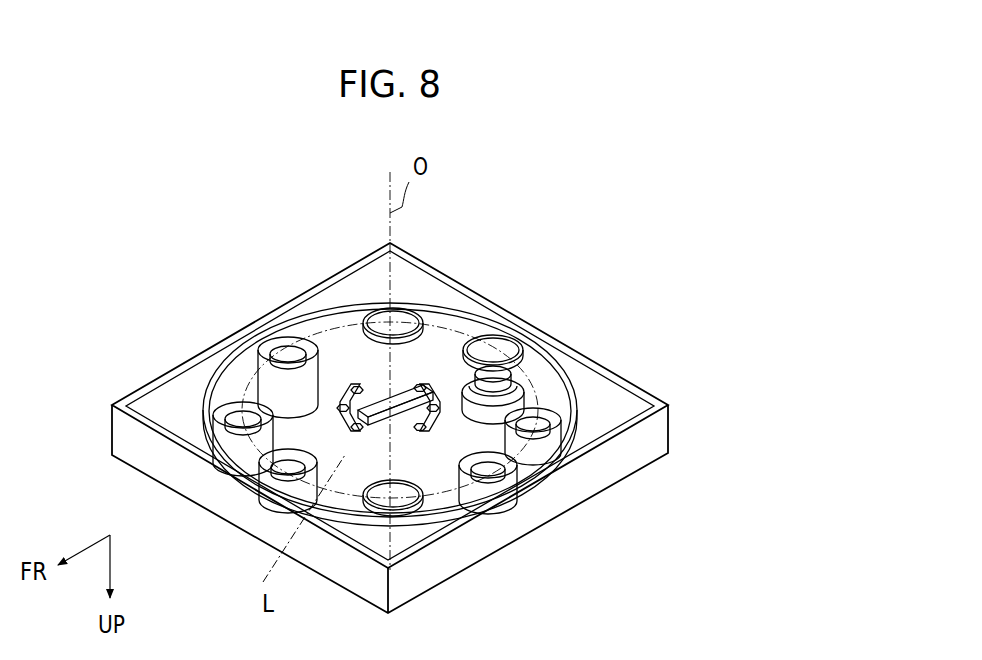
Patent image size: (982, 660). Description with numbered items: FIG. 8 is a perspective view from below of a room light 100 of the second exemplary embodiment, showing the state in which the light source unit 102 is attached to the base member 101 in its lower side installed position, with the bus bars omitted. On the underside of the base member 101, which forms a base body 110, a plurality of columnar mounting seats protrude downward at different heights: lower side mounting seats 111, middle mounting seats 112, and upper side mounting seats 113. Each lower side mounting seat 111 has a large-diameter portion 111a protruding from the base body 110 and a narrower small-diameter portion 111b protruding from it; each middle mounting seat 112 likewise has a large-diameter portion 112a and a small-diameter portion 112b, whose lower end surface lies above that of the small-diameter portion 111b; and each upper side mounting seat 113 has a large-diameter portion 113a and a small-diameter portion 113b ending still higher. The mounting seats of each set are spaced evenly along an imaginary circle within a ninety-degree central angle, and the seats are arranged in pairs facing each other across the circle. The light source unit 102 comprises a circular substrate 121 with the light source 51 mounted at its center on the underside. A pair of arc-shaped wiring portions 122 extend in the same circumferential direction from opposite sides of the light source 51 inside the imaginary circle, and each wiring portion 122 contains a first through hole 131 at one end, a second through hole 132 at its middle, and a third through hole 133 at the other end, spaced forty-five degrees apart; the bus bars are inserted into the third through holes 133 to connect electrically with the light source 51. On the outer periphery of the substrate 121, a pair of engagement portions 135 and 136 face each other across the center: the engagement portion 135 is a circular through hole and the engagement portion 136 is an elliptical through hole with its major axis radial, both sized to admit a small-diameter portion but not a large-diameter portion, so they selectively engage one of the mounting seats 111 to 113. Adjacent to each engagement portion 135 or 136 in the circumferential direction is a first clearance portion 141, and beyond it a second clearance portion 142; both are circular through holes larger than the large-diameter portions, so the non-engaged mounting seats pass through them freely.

The room light 100 is at (626, 207).
The base member 101 is at (680, 425).
The light source unit 102 is at (188, 430).
The base body 110 is at (594, 428).
The lower side mounting seat 111 is at (518, 569).
The large-diameter portion 111a is at (457, 492).
The small-diameter portion 111b is at (473, 490).
The middle mounting seat 112 is at (742, 459).
The large-diameter portion 112a is at (556, 440).
The small-diameter portion 112b is at (572, 410).
The upper side mounting seat 113 is at (534, 327).
The large-diameter portion 113a is at (529, 412).
The small-diameter portion 113b is at (492, 366).
The substrate 121 is at (358, 522).
The wiring portion 122 is at (437, 392).
The first through hole 131 is at (340, 414).
The second through hole 132 is at (341, 406).
The third through hole 133 is at (357, 390).
The engagement portion 135 is at (284, 342).
The engagement portion 136 is at (533, 460).
The first clearance portion 141 is at (402, 312).
The second clearance portion 142 is at (472, 340).
The light source 51 is at (413, 390).